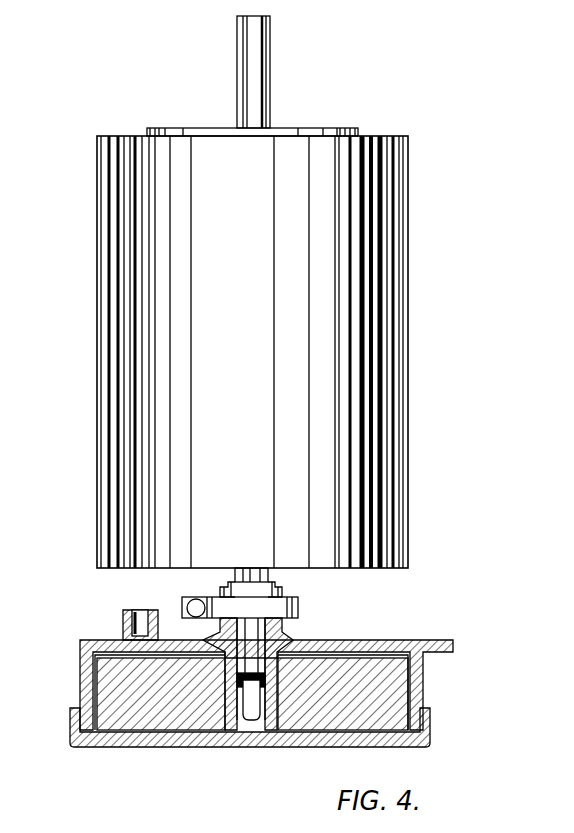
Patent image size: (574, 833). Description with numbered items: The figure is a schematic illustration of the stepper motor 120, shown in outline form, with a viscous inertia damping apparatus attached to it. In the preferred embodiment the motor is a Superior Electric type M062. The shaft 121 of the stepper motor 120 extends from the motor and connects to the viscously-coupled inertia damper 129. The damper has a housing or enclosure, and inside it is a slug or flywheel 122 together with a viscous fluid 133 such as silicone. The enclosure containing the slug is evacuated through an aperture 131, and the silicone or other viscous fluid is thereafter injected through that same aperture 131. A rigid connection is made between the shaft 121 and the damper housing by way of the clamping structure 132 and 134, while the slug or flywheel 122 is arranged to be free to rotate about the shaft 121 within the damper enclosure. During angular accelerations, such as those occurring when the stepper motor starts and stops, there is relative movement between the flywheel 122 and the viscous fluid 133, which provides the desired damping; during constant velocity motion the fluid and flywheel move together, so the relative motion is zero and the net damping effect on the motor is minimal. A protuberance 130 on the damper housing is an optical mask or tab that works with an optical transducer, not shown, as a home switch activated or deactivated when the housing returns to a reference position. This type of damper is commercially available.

The stepper motor 120 is at (400, 200).
The shaft 121 is at (272, 46).
The slug or flywheel 122 is at (105, 680).
The viscously-coupled inertia damper 129 is at (105, 746).
The protuberance 130 is at (448, 640).
The aperture 131 is at (135, 612).
The clamping structure 132 is at (281, 588).
The viscous fluid 133 is at (100, 652).
The clamping structure 134 is at (298, 610).